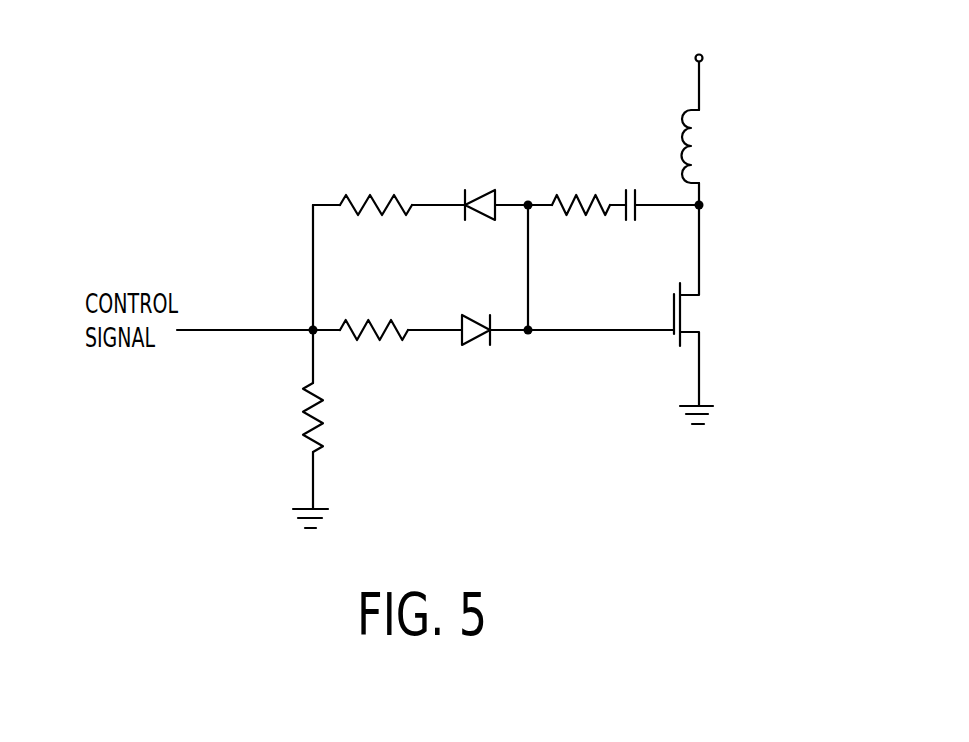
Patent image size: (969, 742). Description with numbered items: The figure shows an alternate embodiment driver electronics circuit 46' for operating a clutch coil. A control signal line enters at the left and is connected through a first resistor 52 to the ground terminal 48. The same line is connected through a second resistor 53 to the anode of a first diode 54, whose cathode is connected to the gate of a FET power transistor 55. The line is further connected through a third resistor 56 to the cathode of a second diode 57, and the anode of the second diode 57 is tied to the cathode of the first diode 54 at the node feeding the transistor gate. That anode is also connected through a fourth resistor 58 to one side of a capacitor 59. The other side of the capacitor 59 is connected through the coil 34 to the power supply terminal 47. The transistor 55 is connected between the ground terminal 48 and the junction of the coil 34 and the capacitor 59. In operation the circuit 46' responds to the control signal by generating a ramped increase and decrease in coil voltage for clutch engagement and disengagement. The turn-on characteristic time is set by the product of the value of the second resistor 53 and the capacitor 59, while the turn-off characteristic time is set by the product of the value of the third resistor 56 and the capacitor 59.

The driver electronics circuit 46' is at (408, 92).
The power supply terminal 47 is at (695, 59).
The coil 34 is at (686, 160).
The fourth resistor 58 is at (550, 198).
The capacitor 59 is at (638, 196).
The third resistor 56 is at (380, 214).
The second diode 57 is at (480, 216).
The second resistor 53 is at (372, 350).
The first diode 54 is at (491, 343).
The first resistor 52 is at (305, 407).
The FET power transistor 55 is at (672, 305).
The ground terminal 48 is at (296, 507).